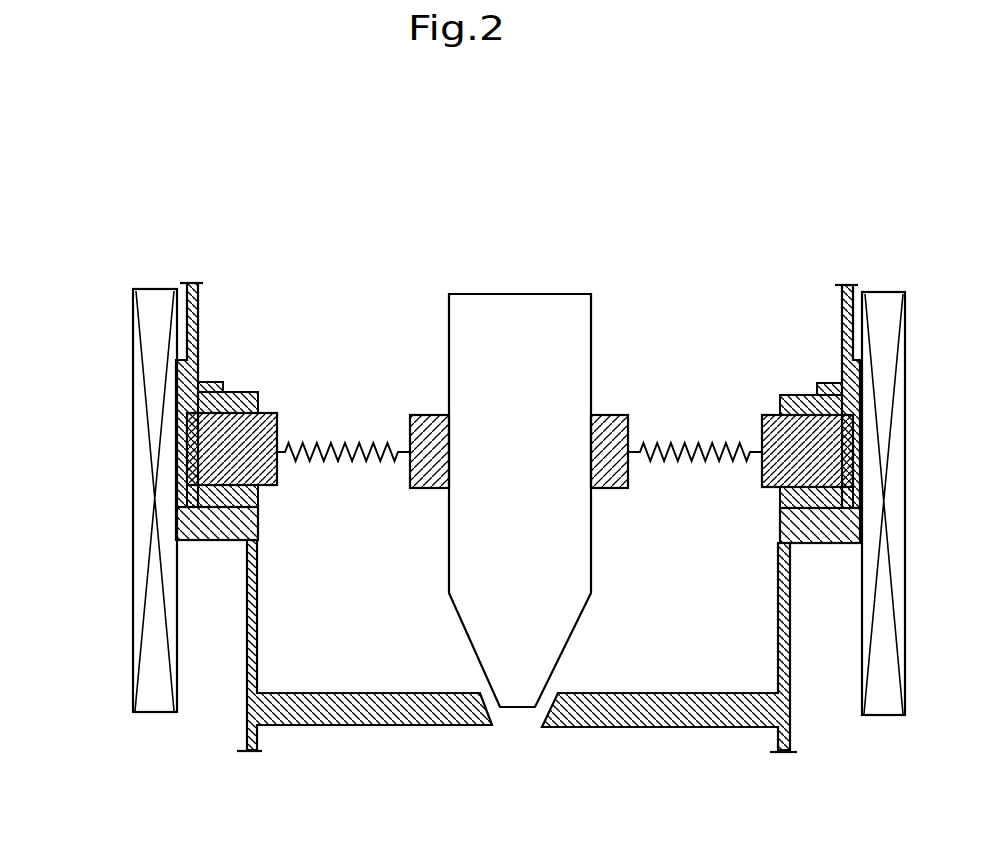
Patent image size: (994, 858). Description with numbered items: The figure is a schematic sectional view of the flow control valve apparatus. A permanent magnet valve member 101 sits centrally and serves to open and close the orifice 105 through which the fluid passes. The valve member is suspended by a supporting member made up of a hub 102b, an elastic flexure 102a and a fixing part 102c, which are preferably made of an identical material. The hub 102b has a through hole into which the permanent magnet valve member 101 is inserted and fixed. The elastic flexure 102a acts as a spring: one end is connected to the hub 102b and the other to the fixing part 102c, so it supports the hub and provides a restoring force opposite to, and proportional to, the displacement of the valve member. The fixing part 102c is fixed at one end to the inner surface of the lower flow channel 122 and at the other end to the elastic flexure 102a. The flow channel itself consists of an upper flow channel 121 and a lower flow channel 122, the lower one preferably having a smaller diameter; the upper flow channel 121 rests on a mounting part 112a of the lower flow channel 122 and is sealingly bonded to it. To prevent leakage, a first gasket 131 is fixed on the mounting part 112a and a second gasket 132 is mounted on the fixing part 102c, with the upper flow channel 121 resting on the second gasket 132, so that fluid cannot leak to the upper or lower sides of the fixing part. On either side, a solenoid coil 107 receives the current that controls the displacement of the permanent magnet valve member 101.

The permanent magnet valve member 101 is at (527, 313).
The orifice 105 is at (517, 720).
The elastic flexure 102a is at (368, 455).
The hub 102b is at (435, 432).
The fixing part 102c is at (182, 450).
The solenoid coil 107 is at (157, 706).
The mounting part 112a is at (235, 503).
The upper flow channel 121 is at (235, 315).
The lower flow channel 122 is at (278, 658).
The first gasket 131 is at (178, 496).
The second gasket 132 is at (193, 410).